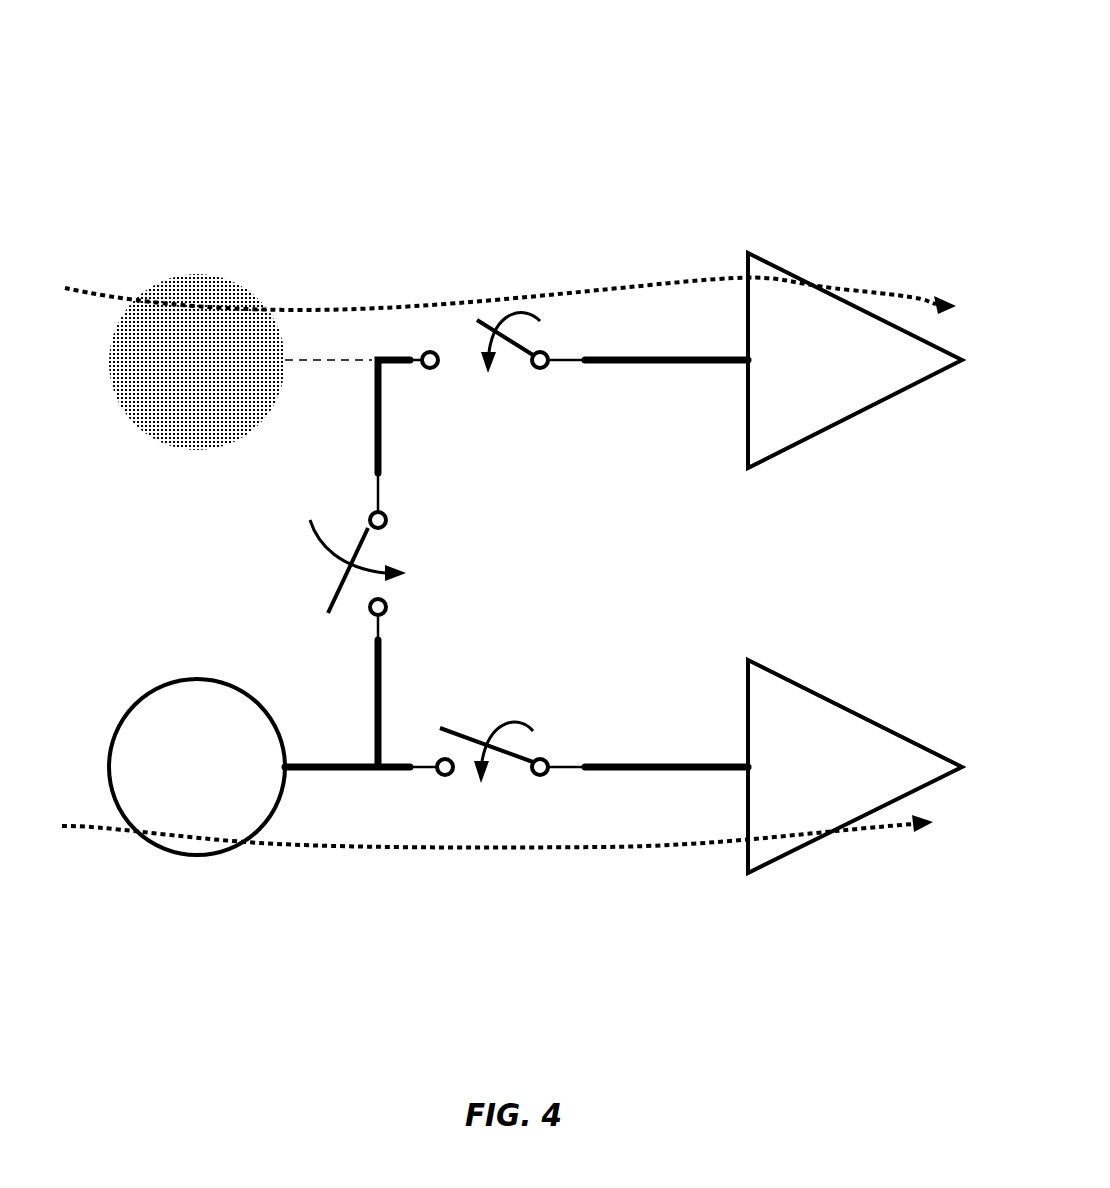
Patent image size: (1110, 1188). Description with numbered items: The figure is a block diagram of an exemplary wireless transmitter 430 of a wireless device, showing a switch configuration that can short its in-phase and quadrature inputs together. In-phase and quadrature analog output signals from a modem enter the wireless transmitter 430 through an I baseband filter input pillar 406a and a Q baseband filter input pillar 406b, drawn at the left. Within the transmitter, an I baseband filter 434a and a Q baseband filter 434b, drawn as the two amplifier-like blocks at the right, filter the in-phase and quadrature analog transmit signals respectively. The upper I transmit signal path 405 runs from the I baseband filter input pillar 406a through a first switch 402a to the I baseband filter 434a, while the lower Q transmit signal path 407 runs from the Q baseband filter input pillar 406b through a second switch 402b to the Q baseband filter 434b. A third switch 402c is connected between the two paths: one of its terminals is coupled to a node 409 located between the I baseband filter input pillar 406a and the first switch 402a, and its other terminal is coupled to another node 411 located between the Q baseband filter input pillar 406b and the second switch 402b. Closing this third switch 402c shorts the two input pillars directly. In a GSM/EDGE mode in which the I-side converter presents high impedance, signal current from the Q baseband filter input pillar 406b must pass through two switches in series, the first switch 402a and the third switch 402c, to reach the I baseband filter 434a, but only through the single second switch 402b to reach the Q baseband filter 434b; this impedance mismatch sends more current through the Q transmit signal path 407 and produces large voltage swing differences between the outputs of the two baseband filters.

The wireless transmitter 430 is at (441, 110).
The I transmit signal path 405 is at (655, 285).
The Q transmit signal path 407 is at (570, 850).
The I baseband filter input pillar 406a is at (225, 374).
The Q baseband filter input pillar 406b is at (225, 779).
The node 409 is at (375, 364).
The node 411 is at (378, 775).
The first switch 402a is at (585, 359).
The second switch 402b is at (592, 774).
The third switch 402c is at (385, 556).
The I baseband filter 434a is at (828, 376).
The Q baseband filter 434b is at (835, 779).